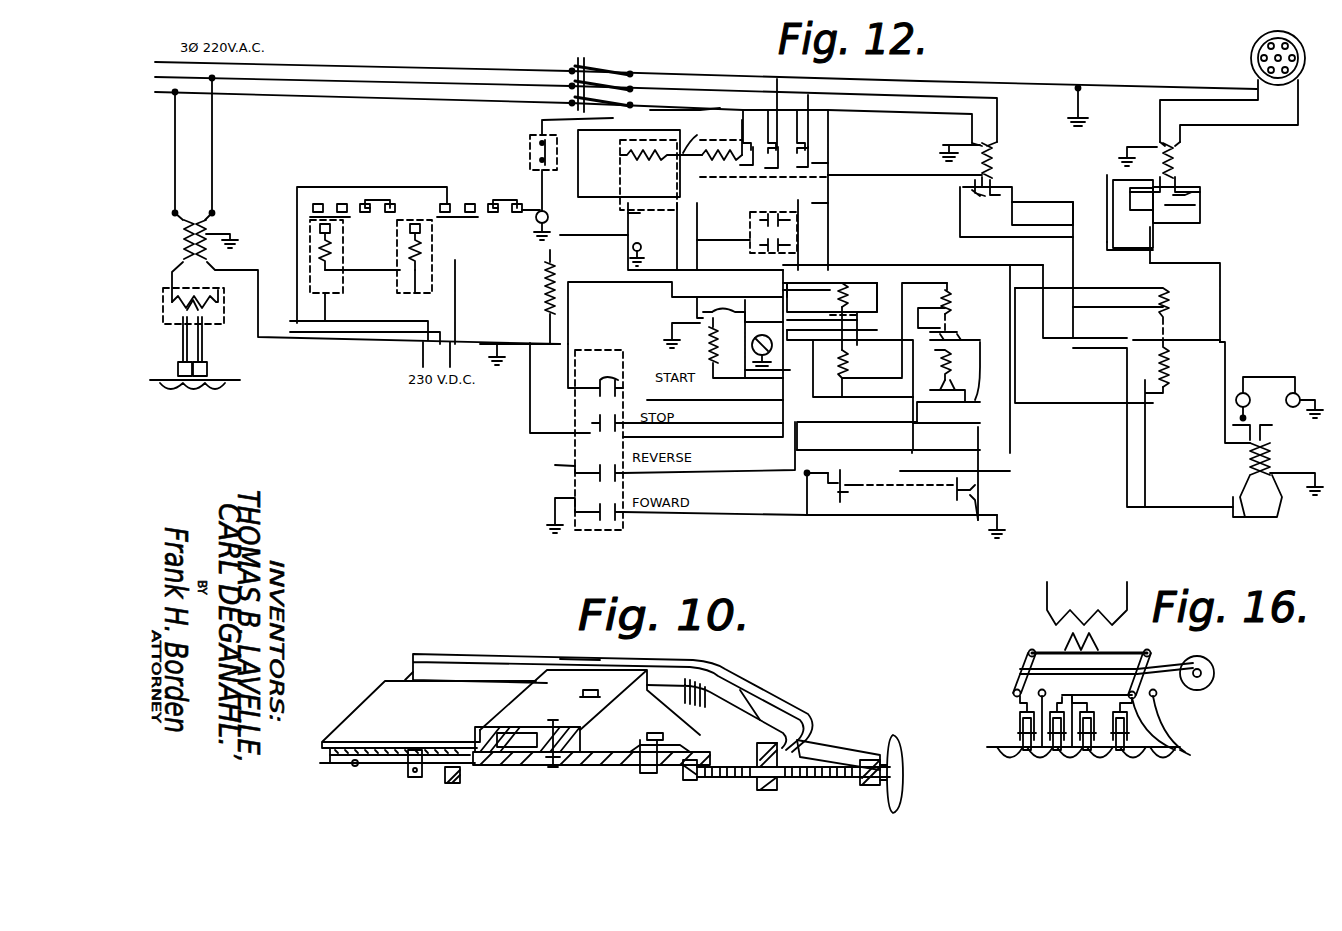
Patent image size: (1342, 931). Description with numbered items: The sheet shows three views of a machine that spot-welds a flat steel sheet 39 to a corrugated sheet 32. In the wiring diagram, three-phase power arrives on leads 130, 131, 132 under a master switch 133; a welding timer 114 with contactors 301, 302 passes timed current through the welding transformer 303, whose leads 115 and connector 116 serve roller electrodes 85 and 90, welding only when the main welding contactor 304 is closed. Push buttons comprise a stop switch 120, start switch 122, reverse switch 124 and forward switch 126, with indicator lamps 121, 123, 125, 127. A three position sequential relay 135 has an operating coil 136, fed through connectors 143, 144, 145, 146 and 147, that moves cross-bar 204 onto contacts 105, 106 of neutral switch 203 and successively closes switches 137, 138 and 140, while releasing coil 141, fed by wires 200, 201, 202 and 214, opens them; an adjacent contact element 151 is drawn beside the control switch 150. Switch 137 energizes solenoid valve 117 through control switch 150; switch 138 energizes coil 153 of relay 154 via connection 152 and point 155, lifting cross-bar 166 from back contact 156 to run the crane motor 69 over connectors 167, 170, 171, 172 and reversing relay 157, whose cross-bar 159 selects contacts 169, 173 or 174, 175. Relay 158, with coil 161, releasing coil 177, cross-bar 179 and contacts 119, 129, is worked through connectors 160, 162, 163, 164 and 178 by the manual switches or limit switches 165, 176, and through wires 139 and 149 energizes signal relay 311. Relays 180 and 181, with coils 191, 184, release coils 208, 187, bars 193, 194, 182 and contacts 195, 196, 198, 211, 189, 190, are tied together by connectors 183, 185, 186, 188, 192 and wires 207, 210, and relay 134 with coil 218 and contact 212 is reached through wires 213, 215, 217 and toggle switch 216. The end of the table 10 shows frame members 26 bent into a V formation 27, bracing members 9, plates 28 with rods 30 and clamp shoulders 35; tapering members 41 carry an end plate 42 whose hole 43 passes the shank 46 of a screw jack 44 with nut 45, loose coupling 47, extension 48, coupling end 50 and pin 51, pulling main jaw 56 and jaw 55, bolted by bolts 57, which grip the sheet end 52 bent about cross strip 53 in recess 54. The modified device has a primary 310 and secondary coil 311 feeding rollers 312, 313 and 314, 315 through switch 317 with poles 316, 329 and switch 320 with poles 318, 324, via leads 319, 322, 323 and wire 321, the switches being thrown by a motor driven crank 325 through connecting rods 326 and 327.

In FIG. 12, the lead 130 is at (302, 64).
In FIG. 12, the lead 131 is at (318, 79).
In FIG. 12, the lead 132 is at (353, 98).
In FIG. 12, the master switch 133 is at (608, 75).
In FIG. 12, the main welding contactor 304 is at (208, 232).
In FIG. 12, the welding transformer 303 is at (210, 306).
In FIG. 12, the leads 115 is at (181, 348).
In FIG. 12, the connector 116 is at (206, 346).
In FIG. 12, the roller electrode 90 is at (212, 370).
In FIG. 12, the electrode roller 85 is at (175, 388).
In FIG. 12, the welding timer 114 is at (423, 255).
In FIG. 12, the contactor 301 is at (336, 252).
In FIG. 12, the contactor 302 is at (426, 252).
In FIG. 12, the solenoid-operated valve 117 is at (541, 291).
In FIG. 12, the wire 214 is at (530, 401).
In FIG. 12, the connector 146 is at (610, 284).
In FIG. 12, the start switch 122 is at (588, 380).
In FIG. 12, the stop switch 120 is at (599, 440).
In FIG. 12, the reverse switch 124 is at (555, 465).
In FIG. 12, the forward switch 126 is at (555, 498).
In FIG. 12, the releasing coil 141 is at (644, 140).
In FIG. 12, the contact 105 is at (683, 152).
In FIG. 12, the connector 147 is at (629, 163).
In FIG. 12, the wire 202 is at (627, 171).
In FIG. 12, the cross-bar 204 is at (627, 156).
In FIG. 12, the three position sequential relay 135 is at (712, 136).
In FIG. 12, the release contact 106 is at (704, 160).
In FIG. 12, the operating coil 136 is at (764, 155).
In FIG. 12, the switch 137 is at (777, 130).
In FIG. 12, the switch 138 is at (808, 130).
In FIG. 12, the switch 140 is at (820, 150).
In FIG. 12, the connector 143 is at (825, 150).
In FIG. 12, the connection 152 is at (885, 180).
In FIG. 12, the connection 155 is at (945, 152).
In FIG. 12, the coil 153 is at (993, 165).
In FIG. 12, the wire 201 is at (651, 235).
In FIG. 12, the wire 207 is at (650, 225).
In FIG. 12, the lamp 123 is at (655, 255).
In FIG. 12, the wire 200 is at (801, 252).
In FIG. 12, the release or neutral switch 203 is at (739, 236).
In FIG. 12, the contact 151 is at (740, 250).
In FIG. 12, the control switch 150 is at (797, 242).
In FIG. 12, the wire 215 is at (812, 222).
In FIG. 12, the toggle switch 216 is at (814, 203).
In FIG. 12, the wire 217 is at (785, 326).
In FIG. 12, the cross-bar 166 is at (970, 190).
In FIG. 12, the back contact 156 is at (975, 198).
In FIG. 12, the relay 154 is at (962, 205).
In FIG. 12, the connector 172 is at (1175, 226).
In FIG. 12, the connector 160 is at (1086, 272).
In FIG. 12, the wire 139 is at (895, 252).
In FIG. 12, the line 167 is at (1045, 245).
In FIG. 12, the contact 169 is at (1130, 190).
In FIG. 12, the contact 174 is at (1158, 160).
In FIG. 12, the motor reversing relay 157 is at (1181, 160).
In FIG. 12, the contact 175 is at (1182, 190).
In FIG. 12, the contact 173 is at (1185, 200).
In FIG. 12, the cross-bar 159 is at (1185, 206).
In FIG. 12, the connector 170 is at (1232, 102).
In FIG. 12, the connector 171 is at (1250, 128).
In FIG. 12, the crane drive motor 69 is at (1294, 58).
In FIG. 12, the wire 210 is at (783, 283).
In FIG. 12, the contact 212 is at (700, 305).
In FIG. 12, the wire 213 is at (740, 307).
In FIG. 12, the coil 218 is at (706, 352).
In FIG. 12, the relay 134 is at (728, 348).
In FIG. 12, the lamp 121 is at (772, 360).
In FIG. 12, the wire 145 is at (736, 395).
In FIG. 12, the connector 144 is at (832, 297).
In FIG. 12, the release coil 208 is at (856, 293).
In FIG. 12, the contact 198 is at (857, 321).
In FIG. 12, the contact bar 194 is at (874, 297).
In FIG. 12, the contact 211 is at (822, 317).
In FIG. 12, the contact 195 is at (860, 330).
In FIG. 12, the contact 196 is at (806, 341).
In FIG. 12, the contact bar 193 is at (853, 368).
In FIG. 12, the coil 191 is at (838, 366).
In FIG. 12, the wire 186 is at (867, 342).
In FIG. 12, the relay 180 is at (859, 370).
In FIG. 12, the connector 185 is at (880, 380).
In FIG. 12, the connector 192 is at (921, 399).
In FIG. 12, the releasing coil 187 is at (950, 288).
In FIG. 12, the connector 188 is at (950, 305).
In FIG. 12, the contact 190 is at (948, 324).
In FIG. 12, the contact bar 182 is at (962, 332).
In FIG. 12, the contact 189 is at (991, 367).
In FIG. 12, the coil 184 is at (938, 352).
In FIG. 12, the relay 181 is at (949, 375).
In FIG. 12, the connector 183 is at (963, 359).
In FIG. 12, the connection 163 is at (885, 430).
In FIG. 12, the connector 178 is at (882, 457).
In FIG. 12, the automatic limit switch 176 is at (902, 492).
In FIG. 12, the automatic limit switch 165 is at (952, 492).
In FIG. 12, the lead 164 is at (980, 470).
In FIG. 12, the connection 162 is at (1070, 403).
In FIG. 12, the releasing coil 177 is at (1140, 301).
In FIG. 12, the wire 149 is at (1222, 300).
In FIG. 12, the contact 129 is at (1168, 320).
In FIG. 12, the contact 119 is at (1148, 340).
In FIG. 12, the cross-bar 179 is at (1170, 338).
In FIG. 12, the relay 158 is at (1185, 363).
In FIG. 12, the coil 161 is at (1165, 383).
In FIG. 12, the lamp 125 is at (1297, 395).
In FIG. 12, the lamp 127 is at (1279, 403).
In FIG. 12, the signal relay 311 is at (1272, 457).
In FIG. 16, the signal relay 311 is at (1060, 633).
In FIG. 10, the V formation 27 is at (725, 705).
In FIG. 10, the table 10 is at (452, 655).
In FIG. 10, the longitudinal frame members 26 is at (520, 658).
In FIG. 10, the sheet of steel 39 is at (355, 712).
In FIG. 16, the sheet of steel 39 is at (1000, 747).
In FIG. 10, the clamp jaw element 55 is at (590, 702).
In FIG. 10, the bolts 57 is at (595, 688).
In FIG. 10, the end 52 is at (525, 740).
In FIG. 10, the recess 54 is at (475, 735).
In FIG. 10, the cross strip 53 is at (505, 766).
In FIG. 10, the main jaw clamp element 56 is at (585, 766).
In FIG. 10, the rods 30 is at (325, 748).
In FIG. 10, the supporting plates 28 is at (330, 762).
In FIG. 10, the shoulders 35 is at (405, 765).
In FIG. 10, the transverse bracing and frame members 9 is at (450, 770).
In FIG. 10, the coupling end 50 is at (640, 745).
In FIG. 10, the coupling pin 51 is at (664, 722).
In FIG. 10, the extension 48 is at (652, 773).
In FIG. 10, the loose coupling connection 47 is at (690, 782).
In FIG. 10, the central hole 43 is at (757, 750).
In FIG. 10, the threaded shank 46 is at (795, 778).
In FIG. 10, the screw jack 44 is at (848, 730).
In FIG. 10, the transverse end plate 42 is at (815, 735).
In FIG. 10, the tapering frame members 41 is at (770, 718).
In FIG. 10, the nut 45 is at (893, 740).
In FIG. 16, the primary 310 is at (1087, 600).
In FIG. 16, the wire 321 is at (1125, 652).
In FIG. 16, the connecting rod 327 is at (1028, 656).
In FIG. 16, the switch 317 is at (1020, 678).
In FIG. 16, the terminal 316 is at (1013, 695).
In FIG. 16, the connecting rod 326 is at (1170, 668).
In FIG. 16, the motor driven crank 325 is at (1212, 668).
In FIG. 16, the lead 319 is at (1097, 685).
In FIG. 16, the switch 320 is at (1155, 696).
In FIG. 16, the pole 324 is at (1160, 738).
In FIG. 16, the lead 323 is at (1180, 748).
In FIG. 16, the pole 318 is at (1188, 753).
In FIG. 16, the corrugated sheet 32 is at (987, 757).
In FIG. 16, the welding roller 312 is at (1025, 752).
In FIG. 16, the welding roller 313 is at (1057, 755).
In FIG. 16, the roller electrode 314 is at (1087, 755).
In FIG. 16, the roller 315 is at (1122, 755).
In FIG. 16, the pole 329 is at (1035, 762).
In FIG. 16, the lead 322 is at (1072, 757).